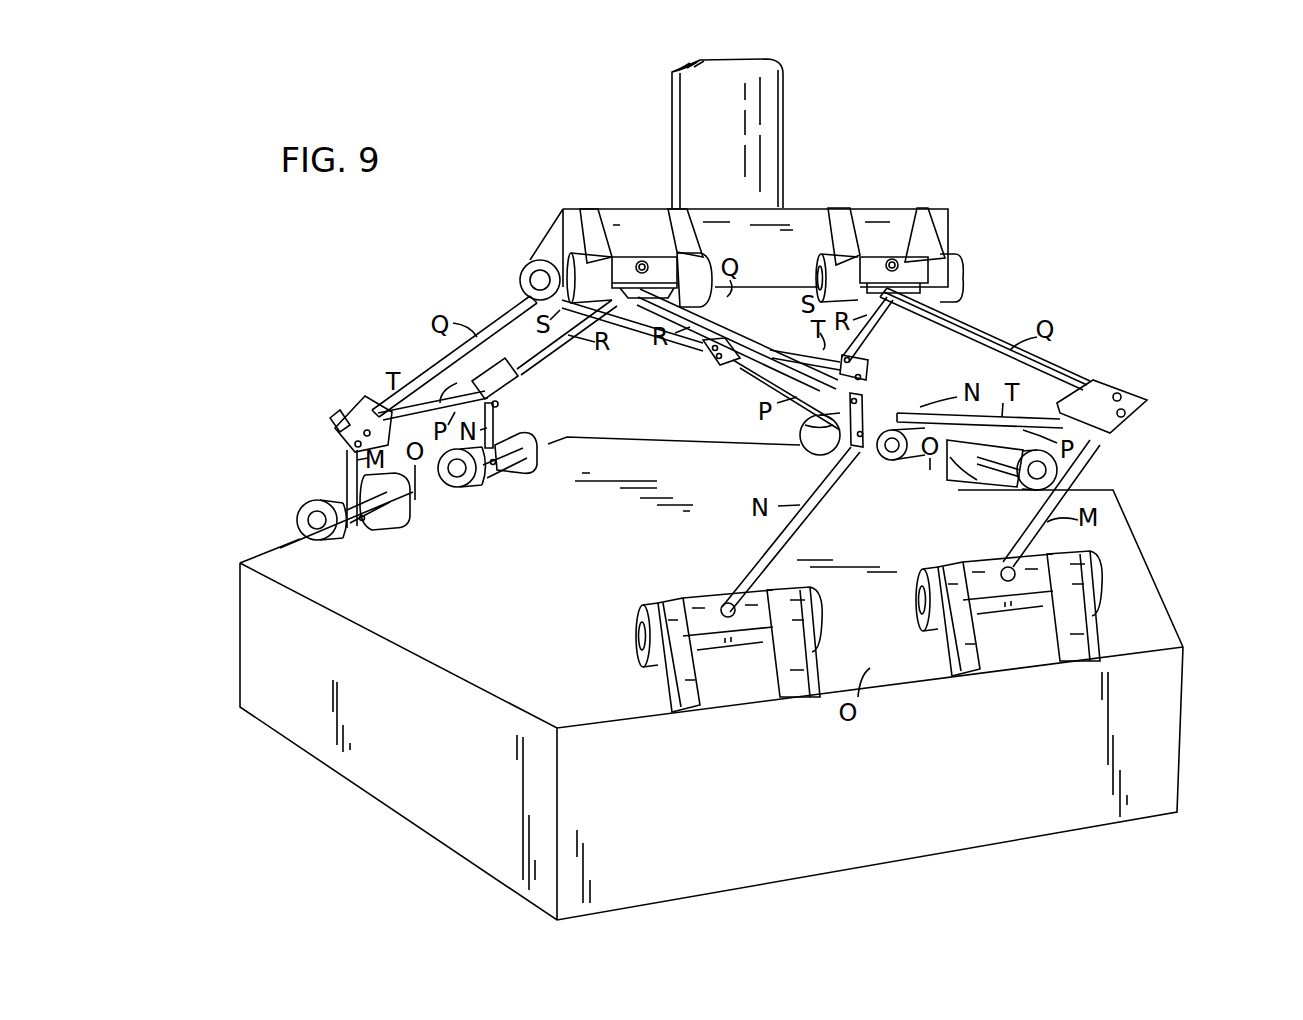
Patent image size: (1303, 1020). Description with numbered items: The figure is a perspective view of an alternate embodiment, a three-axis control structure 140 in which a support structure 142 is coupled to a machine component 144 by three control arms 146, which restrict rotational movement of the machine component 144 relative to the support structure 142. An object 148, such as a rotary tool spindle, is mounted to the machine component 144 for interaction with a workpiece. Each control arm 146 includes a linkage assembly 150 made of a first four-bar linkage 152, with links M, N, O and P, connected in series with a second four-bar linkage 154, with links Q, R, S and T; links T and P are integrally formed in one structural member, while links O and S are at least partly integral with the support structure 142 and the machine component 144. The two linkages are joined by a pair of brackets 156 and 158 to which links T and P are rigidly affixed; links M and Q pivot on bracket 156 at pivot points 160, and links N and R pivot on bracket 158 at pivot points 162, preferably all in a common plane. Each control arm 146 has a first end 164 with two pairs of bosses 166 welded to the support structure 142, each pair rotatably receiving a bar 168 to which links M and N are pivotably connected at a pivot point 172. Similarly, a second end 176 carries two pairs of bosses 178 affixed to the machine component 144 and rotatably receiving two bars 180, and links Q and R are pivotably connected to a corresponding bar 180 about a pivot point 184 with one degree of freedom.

The three-axis control structure 140 is at (972, 148).
The support structure 142 is at (1047, 813).
The machine component 144 is at (795, 220).
The control arm 146 is at (340, 397).
The object 148 is at (765, 101).
The linkage assembly 150 is at (350, 362).
The first four-bar linkage 152 is at (332, 443).
The second four-bar linkage 154 is at (423, 352).
The bracket 156 is at (358, 407).
The bracket 158 is at (487, 387).
The pivot point 160 is at (345, 418).
The pivot point 162 is at (497, 403).
The first end 164 is at (543, 413).
The boss 166 is at (463, 483).
The bar 168 is at (350, 527).
The pivot point 172 is at (727, 602).
The second end 176 is at (507, 282).
The boss 178 is at (553, 243).
The bar 180 is at (618, 257).
The pivot point 184 is at (640, 261).